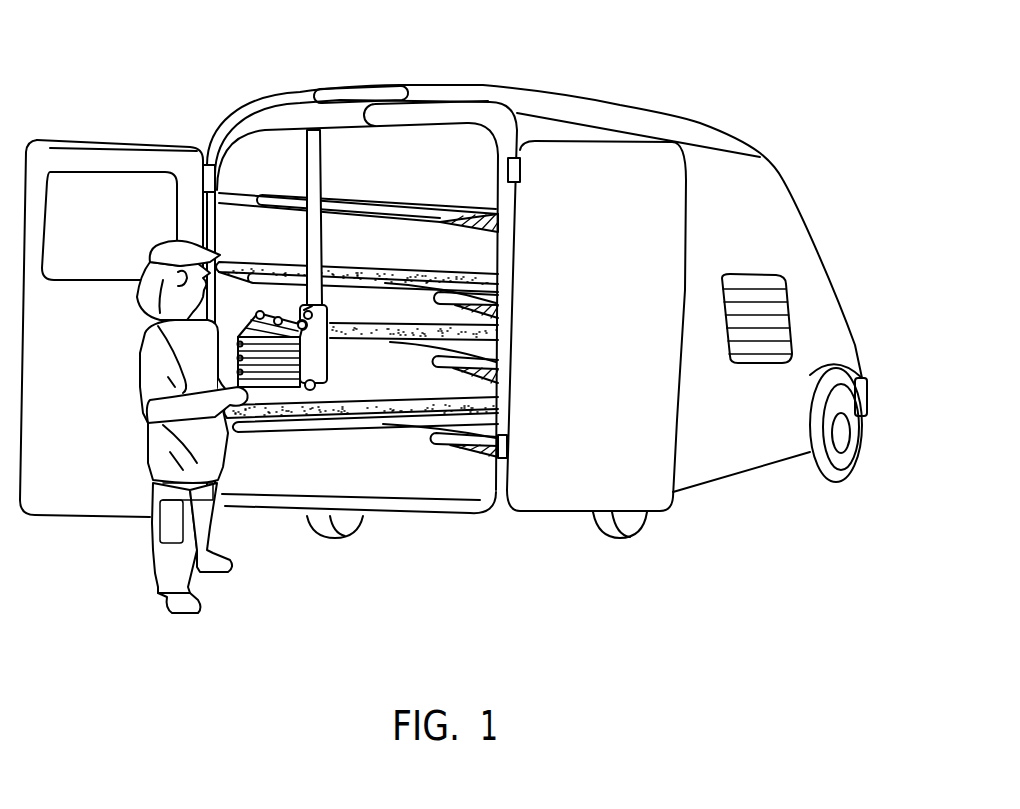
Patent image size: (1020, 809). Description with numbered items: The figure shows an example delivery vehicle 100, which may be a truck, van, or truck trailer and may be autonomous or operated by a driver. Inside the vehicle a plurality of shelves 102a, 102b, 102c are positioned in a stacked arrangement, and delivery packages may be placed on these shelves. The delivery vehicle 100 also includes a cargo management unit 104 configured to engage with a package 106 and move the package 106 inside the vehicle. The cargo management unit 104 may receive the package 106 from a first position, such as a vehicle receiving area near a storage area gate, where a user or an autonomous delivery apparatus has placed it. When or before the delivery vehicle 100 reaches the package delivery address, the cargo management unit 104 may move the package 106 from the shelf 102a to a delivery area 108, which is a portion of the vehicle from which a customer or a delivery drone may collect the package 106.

The delivery vehicle 100 is at (228, 76).
The shelf 102a is at (507, 443).
The shelf 102b is at (513, 362).
The shelf 102c is at (508, 307).
The cargo management unit 104 is at (317, 357).
The package 106 is at (262, 358).
The delivery area 108 is at (780, 308).